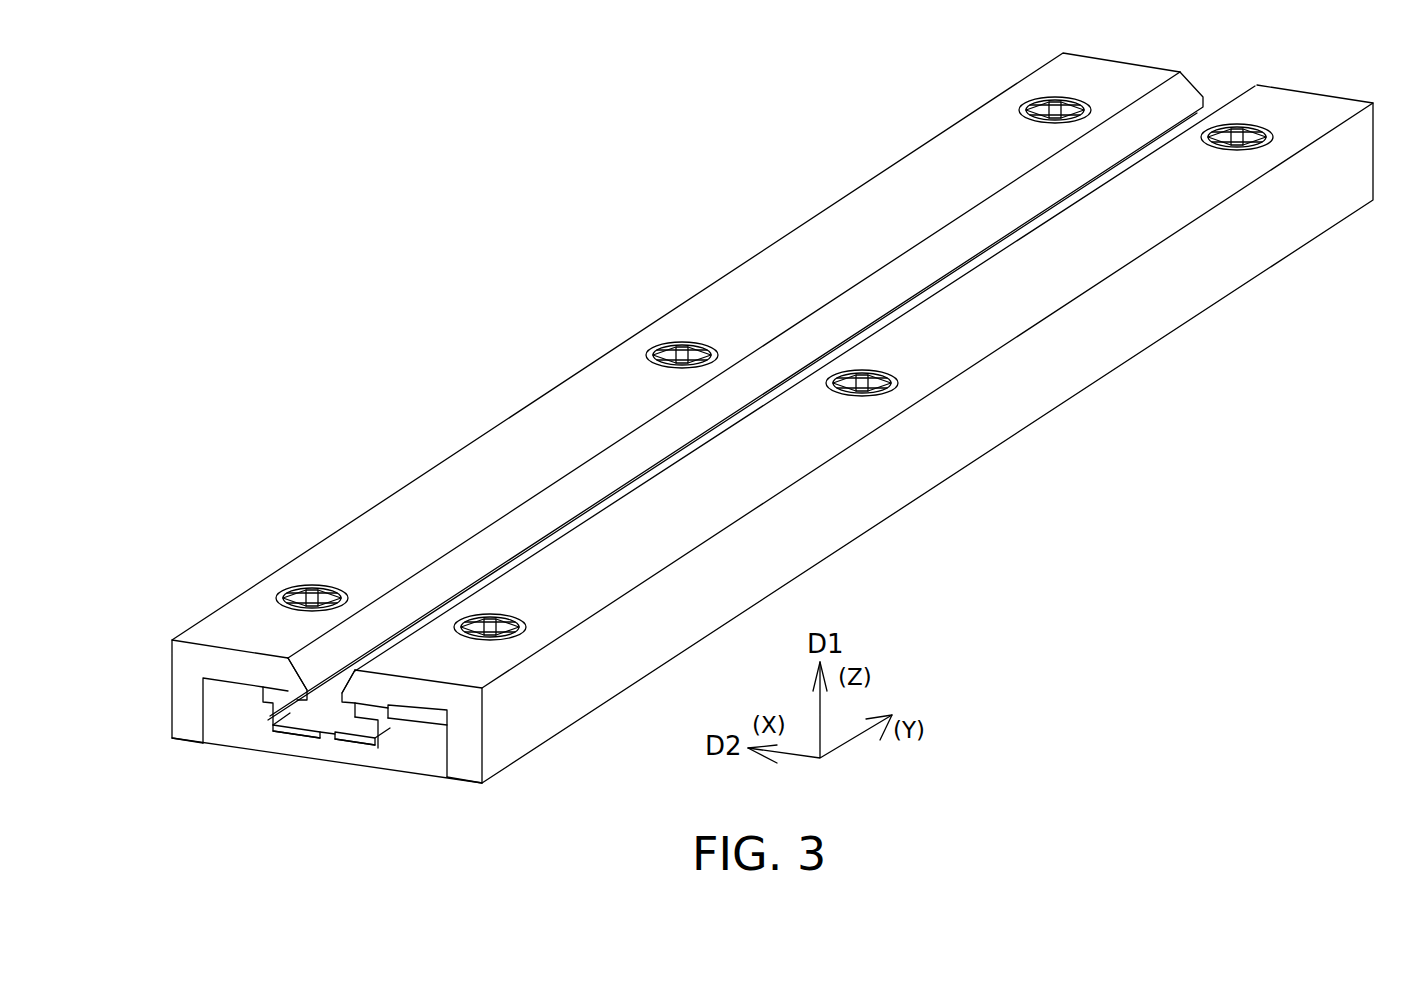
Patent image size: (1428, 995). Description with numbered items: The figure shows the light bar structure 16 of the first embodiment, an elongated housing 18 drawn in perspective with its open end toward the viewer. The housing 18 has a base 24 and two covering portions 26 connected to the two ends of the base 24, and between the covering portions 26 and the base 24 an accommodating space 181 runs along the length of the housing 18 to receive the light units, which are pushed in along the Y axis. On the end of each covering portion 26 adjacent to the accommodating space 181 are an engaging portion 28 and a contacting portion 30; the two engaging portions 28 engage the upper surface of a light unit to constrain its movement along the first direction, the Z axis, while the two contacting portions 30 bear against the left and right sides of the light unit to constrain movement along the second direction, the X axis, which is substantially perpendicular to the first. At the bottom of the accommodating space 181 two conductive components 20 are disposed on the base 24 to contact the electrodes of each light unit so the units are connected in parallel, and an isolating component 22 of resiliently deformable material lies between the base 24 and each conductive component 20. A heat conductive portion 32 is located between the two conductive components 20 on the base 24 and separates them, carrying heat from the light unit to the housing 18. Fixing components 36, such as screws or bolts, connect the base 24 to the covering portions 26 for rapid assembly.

The light bar structure 16 is at (752, 459).
The housing 18 is at (205, 740).
The accommodating space 181 is at (553, 519).
The conductive component 20 is at (312, 723).
The isolating component 22 is at (300, 737).
The base 24 is at (432, 760).
The covering portion 26 is at (185, 692).
The engaging portion 28 is at (305, 683).
The contacting portion 30 is at (280, 690).
The heat conductive portion 32 is at (325, 741).
The fixing component 36 is at (882, 393).